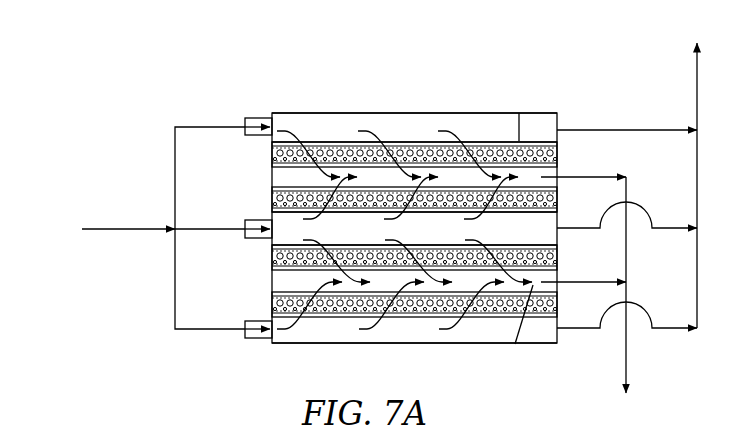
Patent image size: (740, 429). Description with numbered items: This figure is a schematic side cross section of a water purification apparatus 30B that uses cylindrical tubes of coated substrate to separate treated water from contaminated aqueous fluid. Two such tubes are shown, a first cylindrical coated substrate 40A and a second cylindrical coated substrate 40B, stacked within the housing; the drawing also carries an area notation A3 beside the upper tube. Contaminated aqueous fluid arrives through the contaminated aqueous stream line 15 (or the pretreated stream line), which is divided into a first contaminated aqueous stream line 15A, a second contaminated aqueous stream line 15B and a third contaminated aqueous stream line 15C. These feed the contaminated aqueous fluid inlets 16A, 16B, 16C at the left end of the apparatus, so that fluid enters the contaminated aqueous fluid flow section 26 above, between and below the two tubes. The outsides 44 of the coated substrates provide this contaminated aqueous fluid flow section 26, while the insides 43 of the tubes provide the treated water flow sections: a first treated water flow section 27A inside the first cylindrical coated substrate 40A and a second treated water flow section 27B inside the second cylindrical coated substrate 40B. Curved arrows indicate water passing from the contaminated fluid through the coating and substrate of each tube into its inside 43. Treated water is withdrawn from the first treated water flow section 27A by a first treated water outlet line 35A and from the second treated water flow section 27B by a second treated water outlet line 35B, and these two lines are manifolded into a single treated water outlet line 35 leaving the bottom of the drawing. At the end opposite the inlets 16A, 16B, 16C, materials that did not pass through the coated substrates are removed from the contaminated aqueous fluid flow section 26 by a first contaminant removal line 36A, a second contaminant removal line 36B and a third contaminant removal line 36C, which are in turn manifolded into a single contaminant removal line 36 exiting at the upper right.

The water purification apparatus 30B is at (187, 38).
The contaminated aqueous stream line 15 is at (121, 230).
The first contaminated aqueous stream line 15A is at (198, 126).
The second contaminated aqueous stream line 15B is at (195, 233).
The third contaminated aqueous stream line 15C is at (201, 330).
The contaminated aqueous fluid inlet 16A is at (260, 118).
The contaminated aqueous fluid inlet 16B is at (260, 221).
The contaminated aqueous fluid inlet 16C is at (262, 339).
The first cylindrical coated substrate 40A is at (272, 142).
The second cylindrical coated substrate 40B is at (272, 246).
The inside 43 is at (289, 186).
The outside 44 is at (414, 228).
The contaminated aqueous fluid flow section 26 is at (384, 137).
The membrane area A3 = A1 A3 is at (293, 137).
The first treated water flow section 27A is at (519, 113).
The second treated water flow section 27B is at (515, 344).
The first treated water outlet line 35A is at (579, 181).
The second treated water outlet line 35B is at (579, 285).
The treated water outlet line 35 is at (627, 297).
The first contaminant removal line 36A is at (621, 129).
The second contaminant removal line 36B is at (671, 231).
The third contaminant removal line 36C is at (671, 331).
The contaminant removal line 36 is at (697, 80).